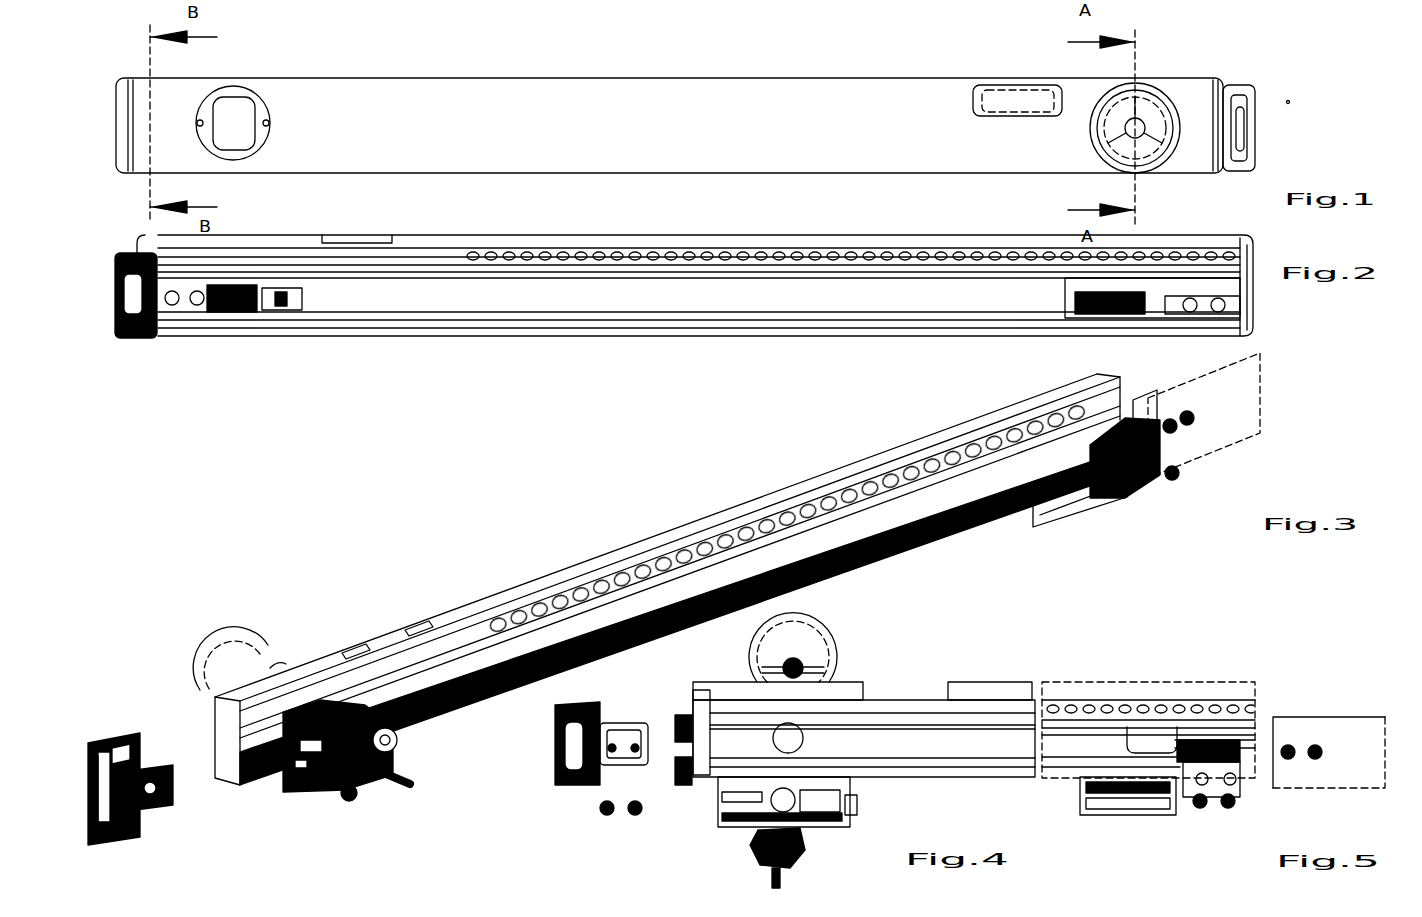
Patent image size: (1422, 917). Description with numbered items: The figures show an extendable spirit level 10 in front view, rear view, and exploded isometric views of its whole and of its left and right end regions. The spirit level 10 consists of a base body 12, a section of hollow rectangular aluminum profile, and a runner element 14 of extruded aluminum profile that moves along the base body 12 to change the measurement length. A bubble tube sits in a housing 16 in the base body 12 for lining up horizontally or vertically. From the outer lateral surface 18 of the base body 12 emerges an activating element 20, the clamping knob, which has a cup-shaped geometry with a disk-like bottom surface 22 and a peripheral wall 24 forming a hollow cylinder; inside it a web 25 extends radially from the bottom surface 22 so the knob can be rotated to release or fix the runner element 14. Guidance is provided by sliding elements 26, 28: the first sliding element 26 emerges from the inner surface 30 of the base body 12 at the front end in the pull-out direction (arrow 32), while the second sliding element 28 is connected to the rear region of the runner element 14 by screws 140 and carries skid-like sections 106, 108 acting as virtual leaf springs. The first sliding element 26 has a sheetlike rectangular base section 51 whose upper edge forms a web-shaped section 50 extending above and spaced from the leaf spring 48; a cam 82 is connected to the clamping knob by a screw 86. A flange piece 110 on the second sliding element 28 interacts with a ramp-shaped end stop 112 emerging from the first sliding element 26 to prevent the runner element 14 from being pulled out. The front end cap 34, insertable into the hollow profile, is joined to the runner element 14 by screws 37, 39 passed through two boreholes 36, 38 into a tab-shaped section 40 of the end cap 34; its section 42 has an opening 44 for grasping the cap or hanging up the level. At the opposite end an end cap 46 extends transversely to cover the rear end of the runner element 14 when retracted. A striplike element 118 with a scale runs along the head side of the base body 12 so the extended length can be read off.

In FIG. 1, the spirit level 10 is at (1292, 101).
In FIG. 1, the base body 12 is at (776, 140).
In FIG. 3, the base body 12 is at (768, 493).
In FIG. 4, the base body 12 is at (1022, 677).
In FIG. 3, the runner element 14 is at (1204, 415).
In FIG. 1, the housing 16 is at (262, 97).
In FIG. 1, the outer lateral surface 18 is at (667, 135).
In FIG. 1, the activating element 20 is at (1150, 166).
In FIG. 3, the activating element 20 is at (238, 648).
In FIG. 4, the activating element 20 is at (826, 633).
In FIG. 3, the bottom surface 22 is at (284, 663).
In FIG. 3, the peripheral wall 24 is at (196, 660).
In FIG. 1, the web 25 is at (1104, 152).
In FIG. 3, the first sliding element 26 is at (315, 807).
In FIG. 4, the first sliding element 26 is at (718, 834).
In FIG. 3, the second sliding element 28 is at (1157, 512).
In FIG. 5, the second sliding element 28 is at (1214, 806).
In FIG. 3, the inner surface 30 is at (468, 676).
In FIG. 3, the pull-out direction 32 is at (567, 531).
In FIG. 1, the front end cap 34 is at (1238, 90).
In FIG. 2, the front end cap 34 is at (140, 338).
In FIG. 3, the front end cap 34 is at (76, 767).
In FIG. 3, the borehole 36 is at (1182, 441).
In FIG. 5, the borehole 36 is at (1287, 761).
In FIG. 3, the screw 37 is at (606, 817).
In FIG. 3, the borehole 38 is at (1226, 420).
In FIG. 5, the borehole 38 is at (1314, 761).
In FIG. 3, the screw 39 is at (635, 817).
In FIG. 3, the tab-shaped section 40 is at (156, 809).
In FIG. 3, the section 42 is at (110, 846).
In FIG. 1, the opening 44 is at (1258, 113).
In FIG. 3, the opening 44 is at (90, 818).
In FIG. 5, the opening 44 is at (1362, 728).
In FIG. 2, the end cap 46 is at (1262, 303).
In FIG. 3, the leaf spring 48 is at (392, 742).
In FIG. 3, the web-shaped section 50 is at (403, 723).
In FIG. 3, the base section 51 is at (292, 786).
In FIG. 3, the cam 82 is at (350, 797).
In FIG. 4, the cam 82 is at (806, 852).
In FIG. 3, the screw 86 is at (412, 789).
In FIG. 5, the spring-like section 106 is at (1205, 704).
In FIG. 5, the spring-like section 108 is at (1236, 704).
In FIG. 5, the flange piece 110 is at (1105, 816).
In FIG. 4, the end stop 112 is at (856, 806).
In FIG. 3, the striplike element 118 is at (688, 538).
In FIG. 5, the striplike element 118 is at (1148, 704).
In FIG. 5, the screws 140 is at (1196, 808).